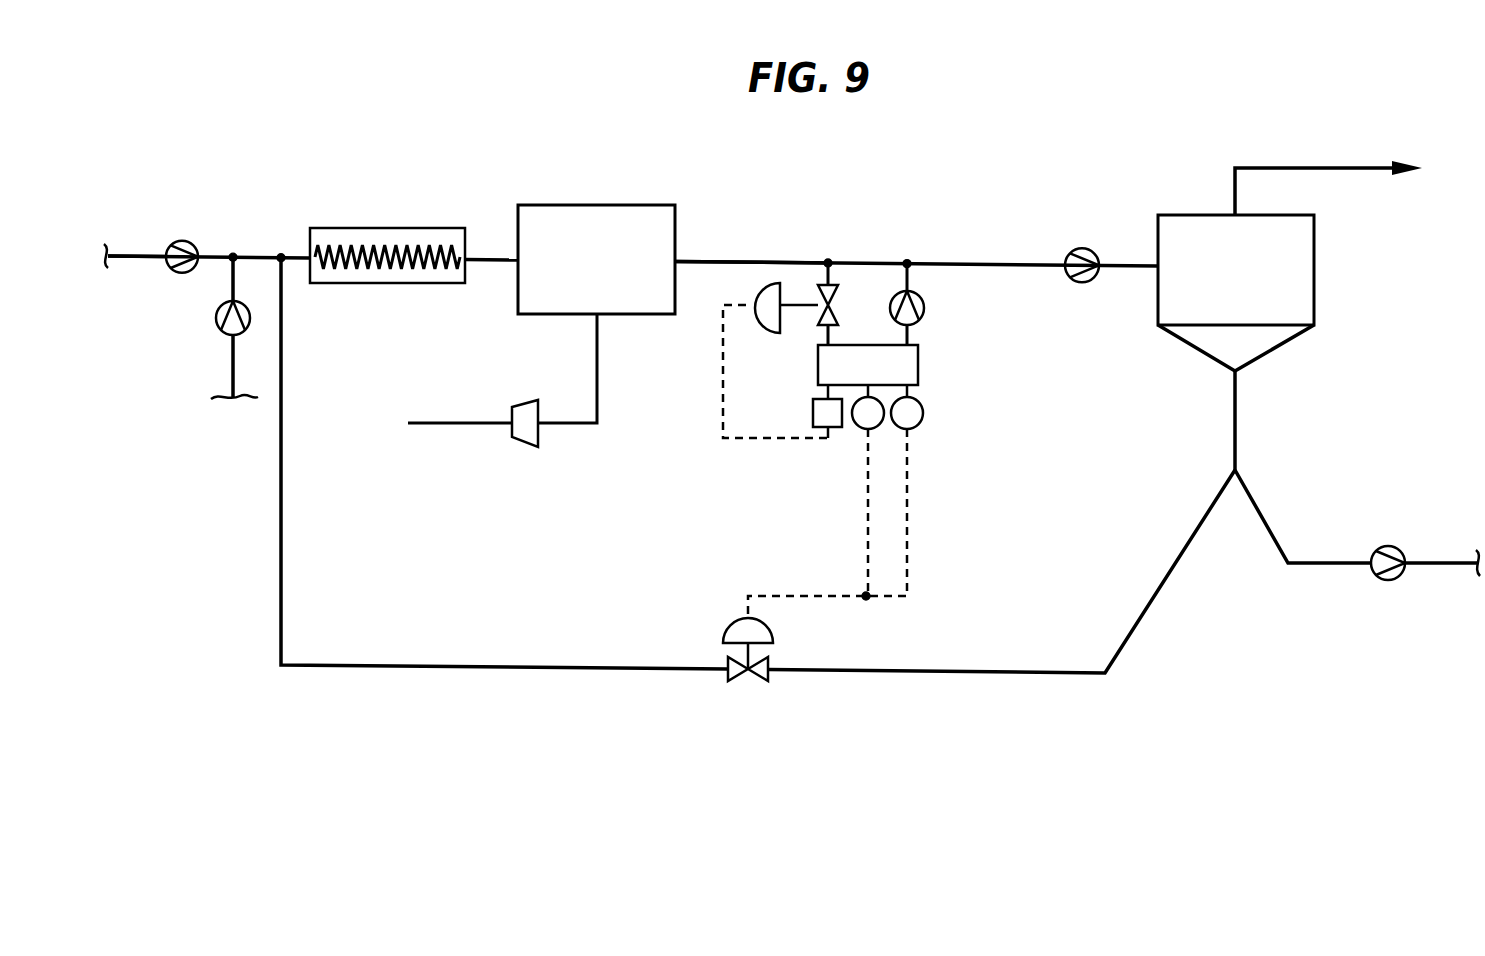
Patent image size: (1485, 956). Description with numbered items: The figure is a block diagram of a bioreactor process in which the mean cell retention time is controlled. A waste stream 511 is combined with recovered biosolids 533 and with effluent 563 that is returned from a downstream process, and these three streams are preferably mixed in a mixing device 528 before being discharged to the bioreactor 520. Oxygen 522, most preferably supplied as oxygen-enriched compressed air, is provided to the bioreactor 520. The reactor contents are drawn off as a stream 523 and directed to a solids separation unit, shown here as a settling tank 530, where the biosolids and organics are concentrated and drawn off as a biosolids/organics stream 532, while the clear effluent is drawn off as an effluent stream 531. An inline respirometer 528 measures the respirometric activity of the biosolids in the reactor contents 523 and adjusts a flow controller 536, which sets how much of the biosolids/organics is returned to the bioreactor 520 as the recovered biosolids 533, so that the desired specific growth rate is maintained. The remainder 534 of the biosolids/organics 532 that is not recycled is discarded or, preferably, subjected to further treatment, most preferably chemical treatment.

The waste stream 511 is at (121, 255).
The effluent 563 is at (230, 274).
The recovered biosolids 533 is at (283, 334).
The mixing device 528 is at (383, 228).
The bioreactor 520 is at (596, 205).
The oxygen 522 is at (556, 423).
The reactor contents stream 523 is at (748, 259).
The settling tank 530 is at (1203, 214).
The effluent stream 531 is at (1358, 166).
The biosolids/organics stream 532 is at (1237, 428).
The remainder of biosolids/organics 534 is at (1318, 562).
The flow controller 536 is at (773, 634).